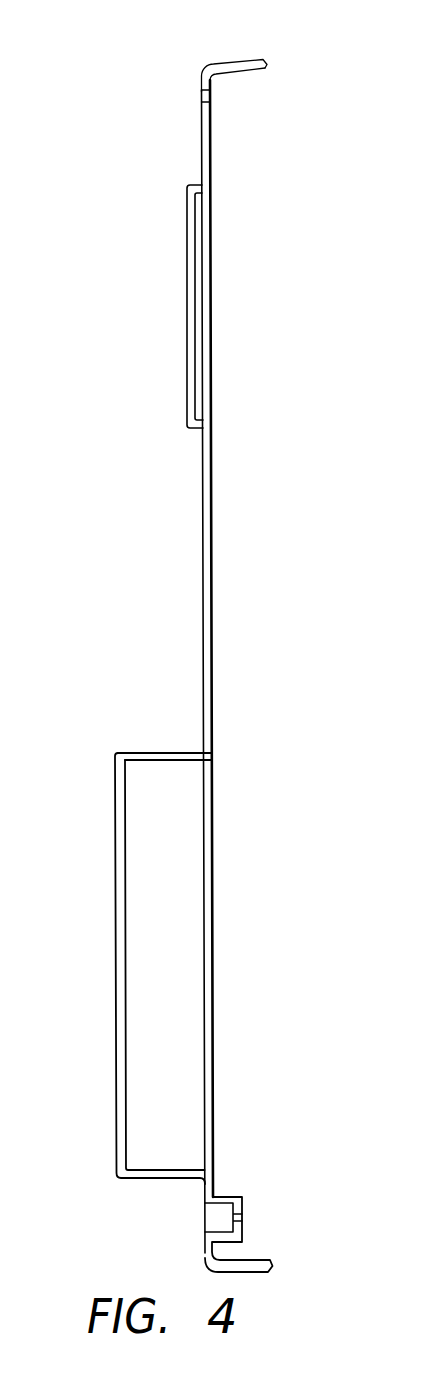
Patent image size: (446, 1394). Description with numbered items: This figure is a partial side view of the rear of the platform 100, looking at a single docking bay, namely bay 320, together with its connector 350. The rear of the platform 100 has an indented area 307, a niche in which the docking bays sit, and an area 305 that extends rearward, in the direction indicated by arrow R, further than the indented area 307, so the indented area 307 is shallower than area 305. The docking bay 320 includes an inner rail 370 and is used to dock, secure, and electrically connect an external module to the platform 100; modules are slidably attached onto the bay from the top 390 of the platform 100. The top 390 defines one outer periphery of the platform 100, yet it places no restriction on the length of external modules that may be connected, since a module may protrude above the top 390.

The platform 100 is at (252, 279).
The area 305 is at (104, 984).
The indented area 307 is at (186, 496).
The docking bay 320 is at (199, 164).
The connector 350 is at (168, 757).
The inner rail 370 is at (188, 322).
The top 390 is at (230, 59).
The arrow R is at (150, 386).